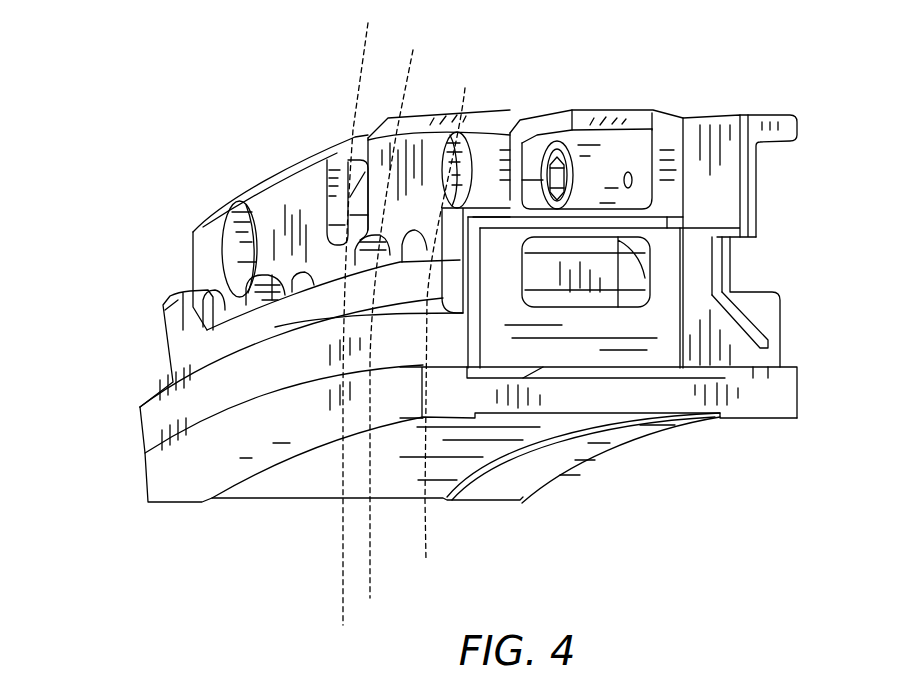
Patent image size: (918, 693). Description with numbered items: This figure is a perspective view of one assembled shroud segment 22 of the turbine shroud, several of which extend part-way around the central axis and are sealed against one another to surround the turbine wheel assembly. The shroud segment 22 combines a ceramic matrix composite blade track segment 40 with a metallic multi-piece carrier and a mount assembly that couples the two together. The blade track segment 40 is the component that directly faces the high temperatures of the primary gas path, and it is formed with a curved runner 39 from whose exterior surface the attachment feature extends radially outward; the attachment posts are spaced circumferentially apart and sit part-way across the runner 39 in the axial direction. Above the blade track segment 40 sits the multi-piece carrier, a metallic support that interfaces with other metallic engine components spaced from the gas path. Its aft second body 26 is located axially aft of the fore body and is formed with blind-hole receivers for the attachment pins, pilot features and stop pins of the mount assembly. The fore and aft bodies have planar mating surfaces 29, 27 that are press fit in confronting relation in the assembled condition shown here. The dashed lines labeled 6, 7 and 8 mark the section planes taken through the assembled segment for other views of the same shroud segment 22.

The shroud segment 22 is at (119, 122).
The second body 26 is at (773, 183).
The planar mating surface 27 is at (680, 350).
The planar mating surface 29 is at (682, 138).
The runner 39 is at (273, 487).
The blade track segment 40 is at (580, 494).
The section line 6- 6 is at (465, 88).
The section line 7- 7 is at (413, 50).
The section line 8- 8 is at (368, 23).